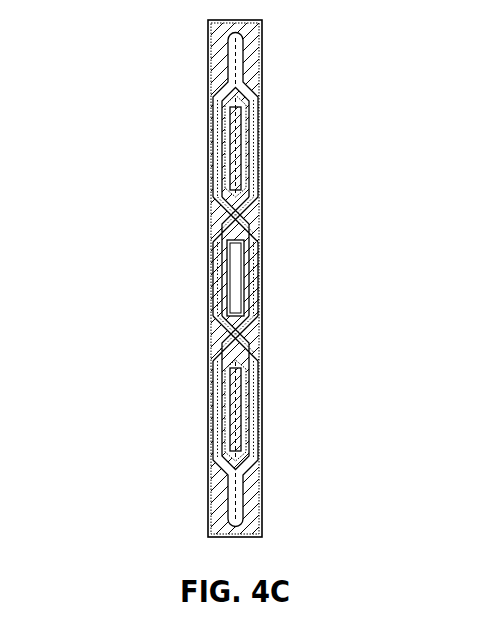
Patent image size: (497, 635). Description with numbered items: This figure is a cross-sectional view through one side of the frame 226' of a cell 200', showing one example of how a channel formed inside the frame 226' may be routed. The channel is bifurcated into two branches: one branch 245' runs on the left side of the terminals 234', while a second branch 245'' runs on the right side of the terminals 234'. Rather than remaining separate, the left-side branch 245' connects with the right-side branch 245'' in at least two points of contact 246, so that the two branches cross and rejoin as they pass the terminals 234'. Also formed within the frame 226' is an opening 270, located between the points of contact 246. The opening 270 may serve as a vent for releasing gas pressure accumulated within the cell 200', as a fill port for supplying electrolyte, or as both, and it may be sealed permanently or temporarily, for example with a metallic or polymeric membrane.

The cell 200' is at (146, 270).
The frame 226' is at (188, 281).
The terminals 234' is at (282, 278).
The branch 245' is at (188, 279).
The second branch 245'' is at (290, 117).
The points of contact 246 is at (240, 217).
The opening 270 is at (236, 278).